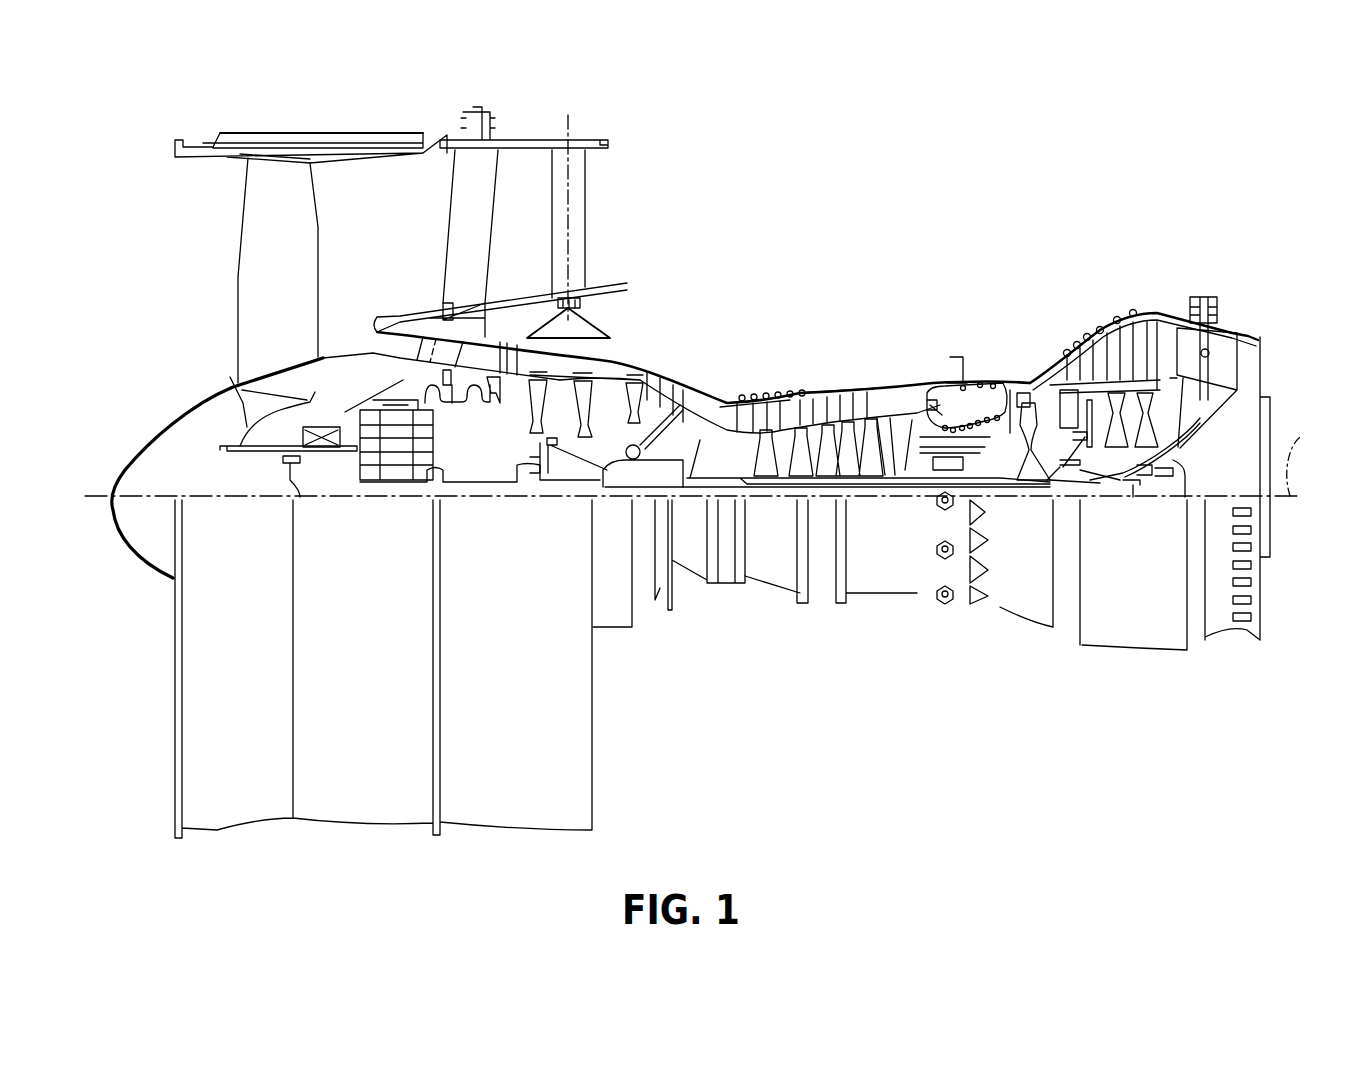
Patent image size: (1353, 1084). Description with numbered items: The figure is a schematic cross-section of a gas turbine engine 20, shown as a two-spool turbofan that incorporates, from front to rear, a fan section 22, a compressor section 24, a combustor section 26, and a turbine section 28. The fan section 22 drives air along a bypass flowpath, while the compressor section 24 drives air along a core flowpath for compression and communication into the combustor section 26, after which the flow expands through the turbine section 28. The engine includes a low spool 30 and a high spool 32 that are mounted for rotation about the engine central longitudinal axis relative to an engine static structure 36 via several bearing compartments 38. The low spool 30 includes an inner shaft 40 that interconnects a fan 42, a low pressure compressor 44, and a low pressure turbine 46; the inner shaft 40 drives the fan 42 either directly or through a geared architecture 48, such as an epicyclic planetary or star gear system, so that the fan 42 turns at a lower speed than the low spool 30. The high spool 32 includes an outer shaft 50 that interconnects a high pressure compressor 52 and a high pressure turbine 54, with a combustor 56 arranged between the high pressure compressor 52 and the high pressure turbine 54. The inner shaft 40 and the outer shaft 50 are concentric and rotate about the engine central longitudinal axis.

The gas turbine engine 20 is at (1022, 198).
The fan section 22 is at (440, 115).
The compressor section 24 is at (853, 258).
The combustor section 26 is at (970, 258).
The turbine section 28 is at (1205, 258).
The low spool 30 is at (677, 453).
The high spool 32 is at (848, 430).
The engine static structure 36 is at (823, 598).
The bearing compartments 38 is at (467, 563).
The inner shaft 40 is at (995, 467).
The fan 42 is at (292, 298).
The low pressure compressor 44 is at (620, 357).
The low pressure turbine 46 is at (1123, 347).
The geared architecture 48 is at (398, 453).
The outer shaft 50 is at (997, 490).
The high pressure compressor 52 is at (755, 417).
The high pressure turbine 54 is at (1031, 397).
The combustor 56 is at (967, 413).